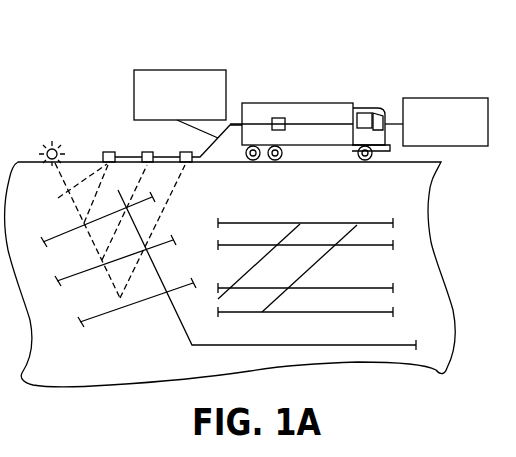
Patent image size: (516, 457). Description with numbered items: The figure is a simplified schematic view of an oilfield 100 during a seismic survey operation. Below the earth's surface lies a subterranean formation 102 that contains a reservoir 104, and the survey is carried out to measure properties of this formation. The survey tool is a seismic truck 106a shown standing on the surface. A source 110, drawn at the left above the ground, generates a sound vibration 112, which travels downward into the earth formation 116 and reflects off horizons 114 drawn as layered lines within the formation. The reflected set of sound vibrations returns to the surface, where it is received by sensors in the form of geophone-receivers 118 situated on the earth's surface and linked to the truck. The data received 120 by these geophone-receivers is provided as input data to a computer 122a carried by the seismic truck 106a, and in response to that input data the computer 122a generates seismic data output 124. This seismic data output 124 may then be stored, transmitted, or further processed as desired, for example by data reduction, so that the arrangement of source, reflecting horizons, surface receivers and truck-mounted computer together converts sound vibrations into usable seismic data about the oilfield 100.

The oilfield 100 is at (394, 77).
The subterranean formation 102 is at (315, 243).
The reservoir 104 is at (374, 280).
The seismic truck 106a is at (331, 102).
The source 110 is at (51, 146).
The sound vibration 112 is at (58, 198).
The horizons 114 is at (141, 203).
The earth formation 116 is at (179, 323).
The geophone-receivers 118 is at (186, 152).
The data received 120 is at (177, 69).
The computer 122a is at (280, 117).
The seismic data output 124 is at (444, 97).